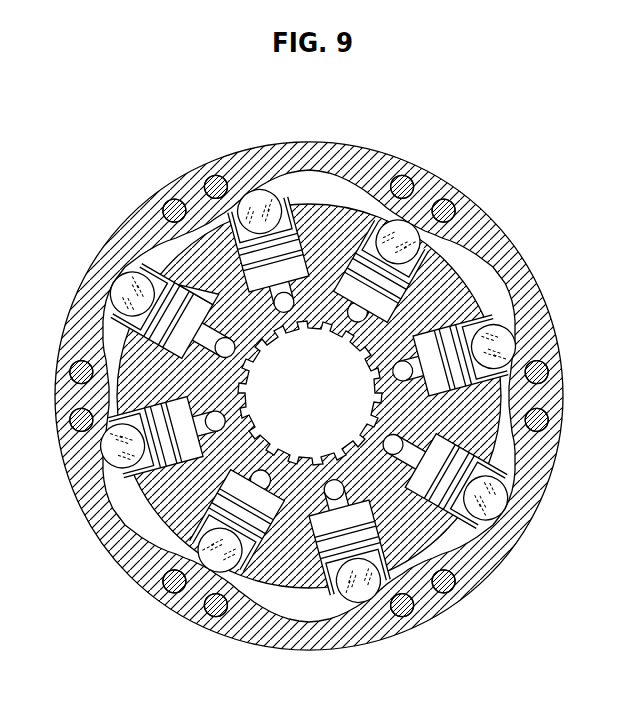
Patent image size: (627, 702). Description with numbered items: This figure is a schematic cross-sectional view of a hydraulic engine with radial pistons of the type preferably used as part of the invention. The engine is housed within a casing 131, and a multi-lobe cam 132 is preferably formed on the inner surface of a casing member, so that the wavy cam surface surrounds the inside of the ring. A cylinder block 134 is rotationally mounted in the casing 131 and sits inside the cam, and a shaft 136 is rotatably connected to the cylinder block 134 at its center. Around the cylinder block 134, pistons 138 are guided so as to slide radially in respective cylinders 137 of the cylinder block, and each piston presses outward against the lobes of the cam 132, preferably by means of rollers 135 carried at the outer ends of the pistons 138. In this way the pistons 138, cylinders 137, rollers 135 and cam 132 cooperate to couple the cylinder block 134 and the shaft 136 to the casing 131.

The casing 131 is at (463, 140).
The multi-lobe cam 132 is at (383, 167).
The cylinder block 134 is at (447, 300).
The rollers 135 is at (138, 297).
The shaft 136 is at (327, 389).
The cylinders 137 is at (203, 292).
The pistons 138 is at (270, 248).